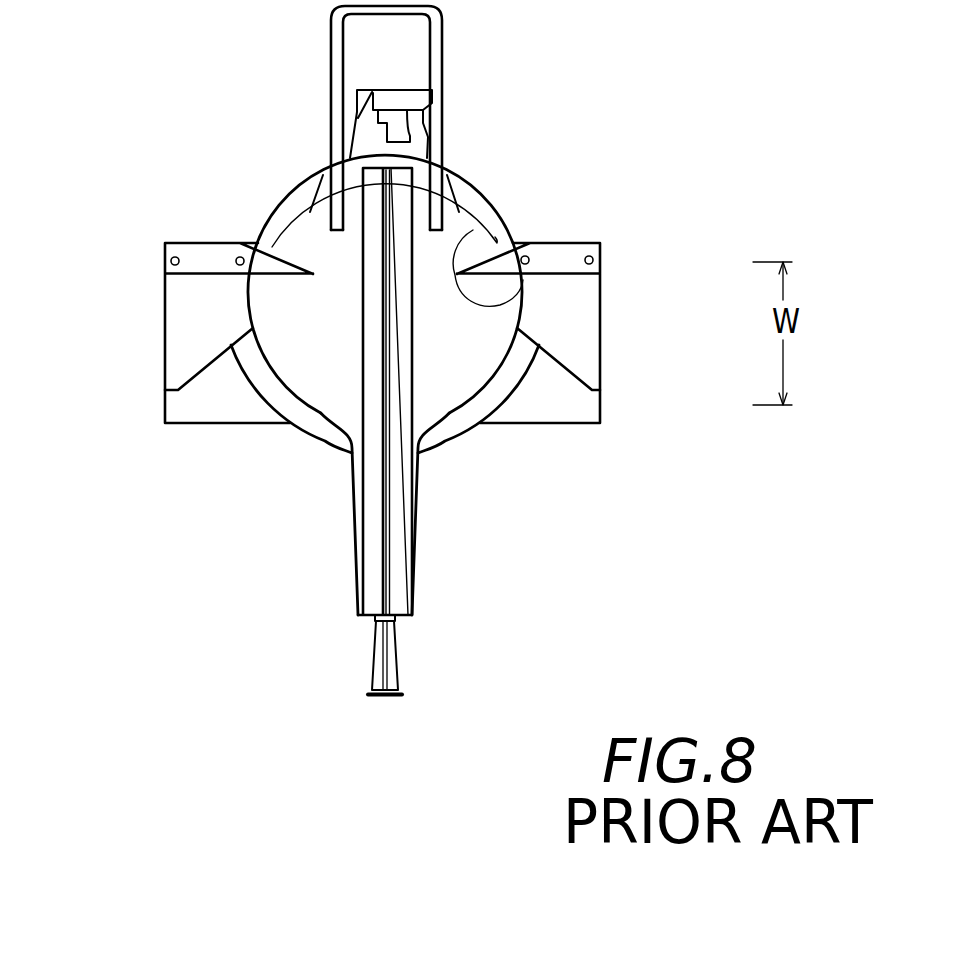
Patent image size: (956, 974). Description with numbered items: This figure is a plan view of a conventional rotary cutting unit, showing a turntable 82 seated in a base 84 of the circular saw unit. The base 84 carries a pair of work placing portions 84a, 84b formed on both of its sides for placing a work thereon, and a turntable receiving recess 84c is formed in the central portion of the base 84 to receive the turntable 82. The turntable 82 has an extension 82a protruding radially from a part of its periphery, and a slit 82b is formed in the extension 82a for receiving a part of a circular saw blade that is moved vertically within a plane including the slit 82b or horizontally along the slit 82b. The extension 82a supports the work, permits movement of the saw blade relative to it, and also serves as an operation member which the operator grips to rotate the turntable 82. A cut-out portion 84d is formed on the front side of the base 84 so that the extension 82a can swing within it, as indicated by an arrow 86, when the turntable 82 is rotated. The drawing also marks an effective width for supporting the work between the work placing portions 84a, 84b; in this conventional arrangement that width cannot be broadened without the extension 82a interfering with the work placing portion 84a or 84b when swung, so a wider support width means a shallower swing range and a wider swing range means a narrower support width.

The turntable 82 is at (455, 417).
The extension 82a is at (415, 563).
The slit 82b is at (387, 500).
The base 84 is at (603, 320).
The work placing portion 84a is at (183, 345).
The work placing portion 84b is at (600, 365).
The turntable receiving recess 84c is at (472, 236).
The cut-out portion 84d is at (204, 368).
The arrow 86 is at (340, 656).